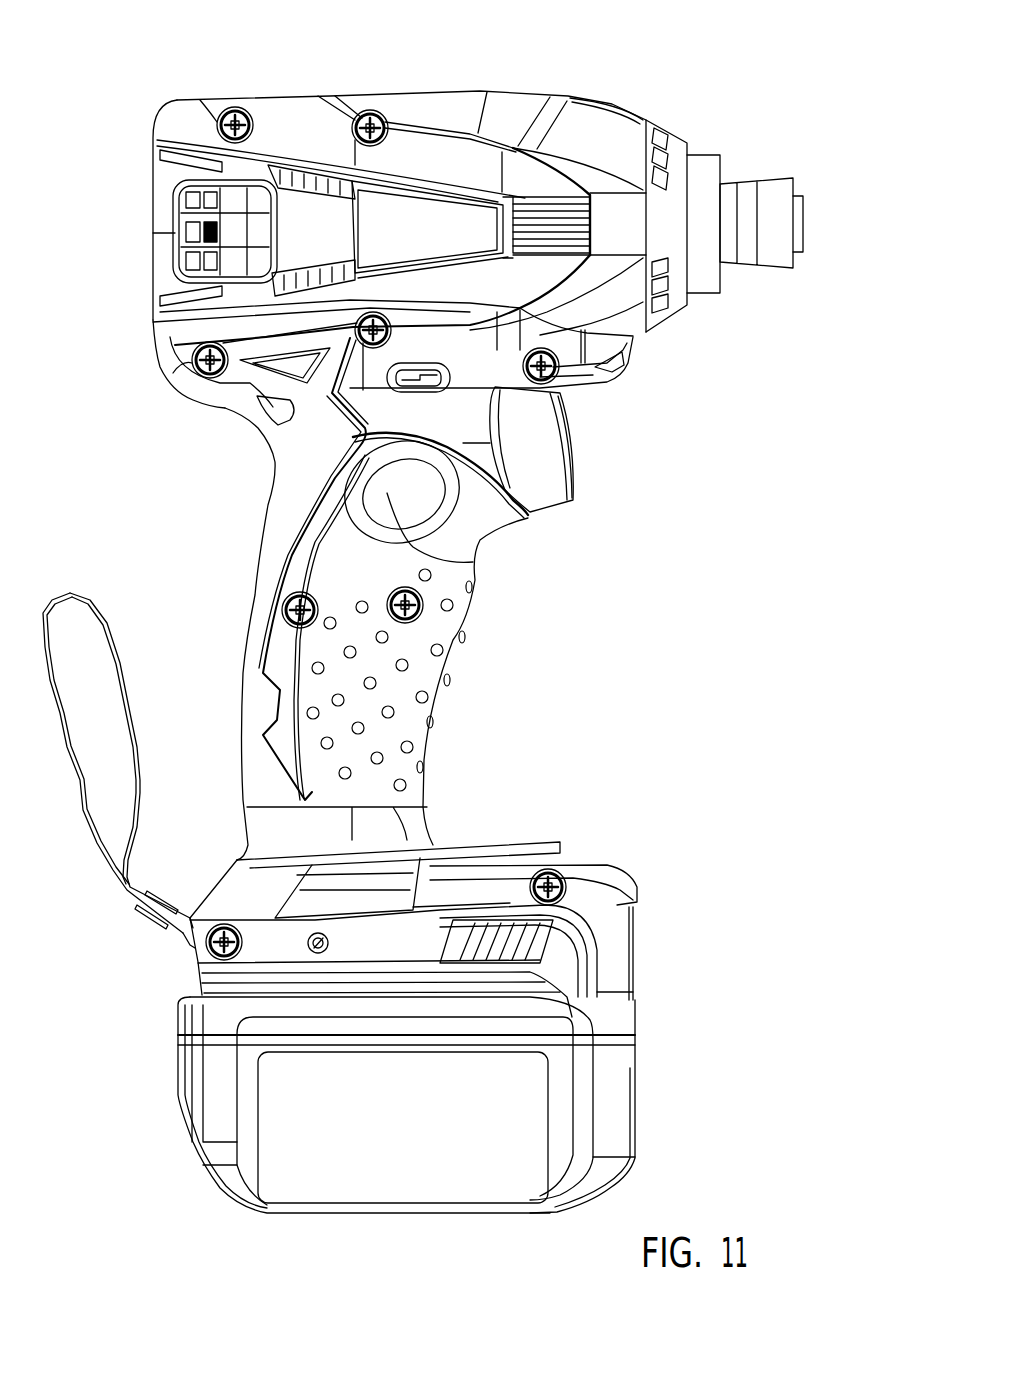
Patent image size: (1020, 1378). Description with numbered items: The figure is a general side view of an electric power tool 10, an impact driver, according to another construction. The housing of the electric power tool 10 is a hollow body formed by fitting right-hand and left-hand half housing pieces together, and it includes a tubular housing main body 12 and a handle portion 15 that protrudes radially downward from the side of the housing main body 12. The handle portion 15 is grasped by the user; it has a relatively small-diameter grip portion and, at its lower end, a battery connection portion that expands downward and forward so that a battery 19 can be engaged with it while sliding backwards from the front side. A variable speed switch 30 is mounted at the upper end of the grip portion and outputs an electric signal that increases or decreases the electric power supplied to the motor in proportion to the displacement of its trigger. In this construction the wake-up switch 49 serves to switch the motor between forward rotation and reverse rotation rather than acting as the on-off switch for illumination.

The electric power tool 10 is at (423, 613).
The housing main body 12 is at (413, 228).
The handle portion 15 is at (470, 668).
The battery 19 is at (653, 999).
The variable speed switch 30 is at (579, 456).
The wake-up switch 49 is at (420, 378).